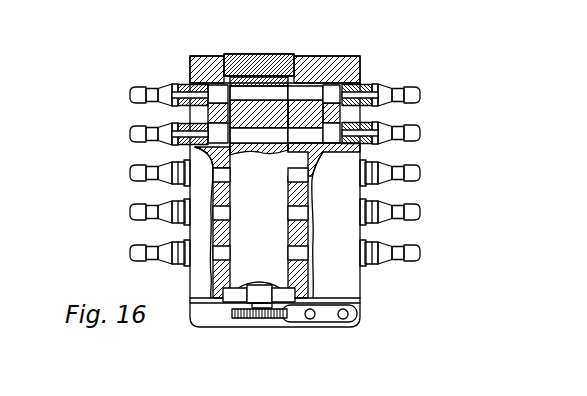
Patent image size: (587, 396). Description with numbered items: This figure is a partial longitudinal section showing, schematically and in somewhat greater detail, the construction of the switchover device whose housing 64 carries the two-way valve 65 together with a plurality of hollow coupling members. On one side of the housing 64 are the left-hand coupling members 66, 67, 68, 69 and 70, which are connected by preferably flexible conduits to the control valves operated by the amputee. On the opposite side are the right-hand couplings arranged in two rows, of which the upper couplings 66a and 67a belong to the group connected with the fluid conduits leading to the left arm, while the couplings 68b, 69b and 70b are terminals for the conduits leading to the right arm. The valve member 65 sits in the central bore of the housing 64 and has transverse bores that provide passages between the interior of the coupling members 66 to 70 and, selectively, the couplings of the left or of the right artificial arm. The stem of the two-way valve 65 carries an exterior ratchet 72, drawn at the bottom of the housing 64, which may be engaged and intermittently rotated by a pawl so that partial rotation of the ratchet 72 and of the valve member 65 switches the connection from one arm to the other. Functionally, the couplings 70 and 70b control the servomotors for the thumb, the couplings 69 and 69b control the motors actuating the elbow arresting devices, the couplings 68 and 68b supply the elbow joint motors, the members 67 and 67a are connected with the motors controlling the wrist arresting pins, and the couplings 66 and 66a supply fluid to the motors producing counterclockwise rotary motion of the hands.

The housing 64 is at (320, 73).
The two-way valve 65 is at (270, 112).
The coupling member 66 is at (134, 91).
The coupling 66a is at (396, 91).
The coupling member 67 is at (132, 133).
The coupling 67a is at (398, 133).
The coupling member 68 is at (130, 173).
The coupling 68b is at (422, 173).
The coupling member 69 is at (130, 212).
The coupling 69b is at (422, 212).
The coupling member 70 is at (128, 254).
The coupling 70b is at (422, 253).
The ratchet 72 is at (271, 318).